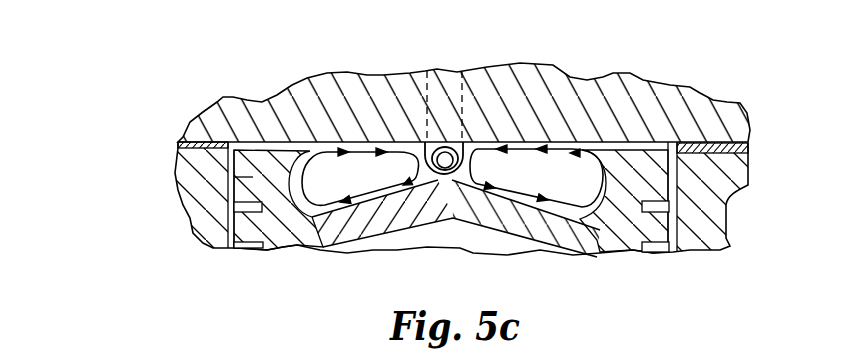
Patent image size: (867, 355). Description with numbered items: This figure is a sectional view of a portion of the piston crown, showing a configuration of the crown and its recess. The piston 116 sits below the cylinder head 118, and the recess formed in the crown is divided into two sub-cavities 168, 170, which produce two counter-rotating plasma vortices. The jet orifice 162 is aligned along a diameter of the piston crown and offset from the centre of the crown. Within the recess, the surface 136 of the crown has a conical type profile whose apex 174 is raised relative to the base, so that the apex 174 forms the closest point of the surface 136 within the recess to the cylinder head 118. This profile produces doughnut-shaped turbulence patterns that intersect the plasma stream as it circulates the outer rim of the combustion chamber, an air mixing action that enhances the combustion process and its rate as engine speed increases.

The head 118 is at (620, 97).
The piston 116 is at (188, 195).
The sub-cavity 170 is at (283, 247).
The sub-cavity 168 is at (518, 198).
The surface 136 is at (563, 228).
The apex 174 is at (474, 163).
The jet orifice 162 is at (443, 170).